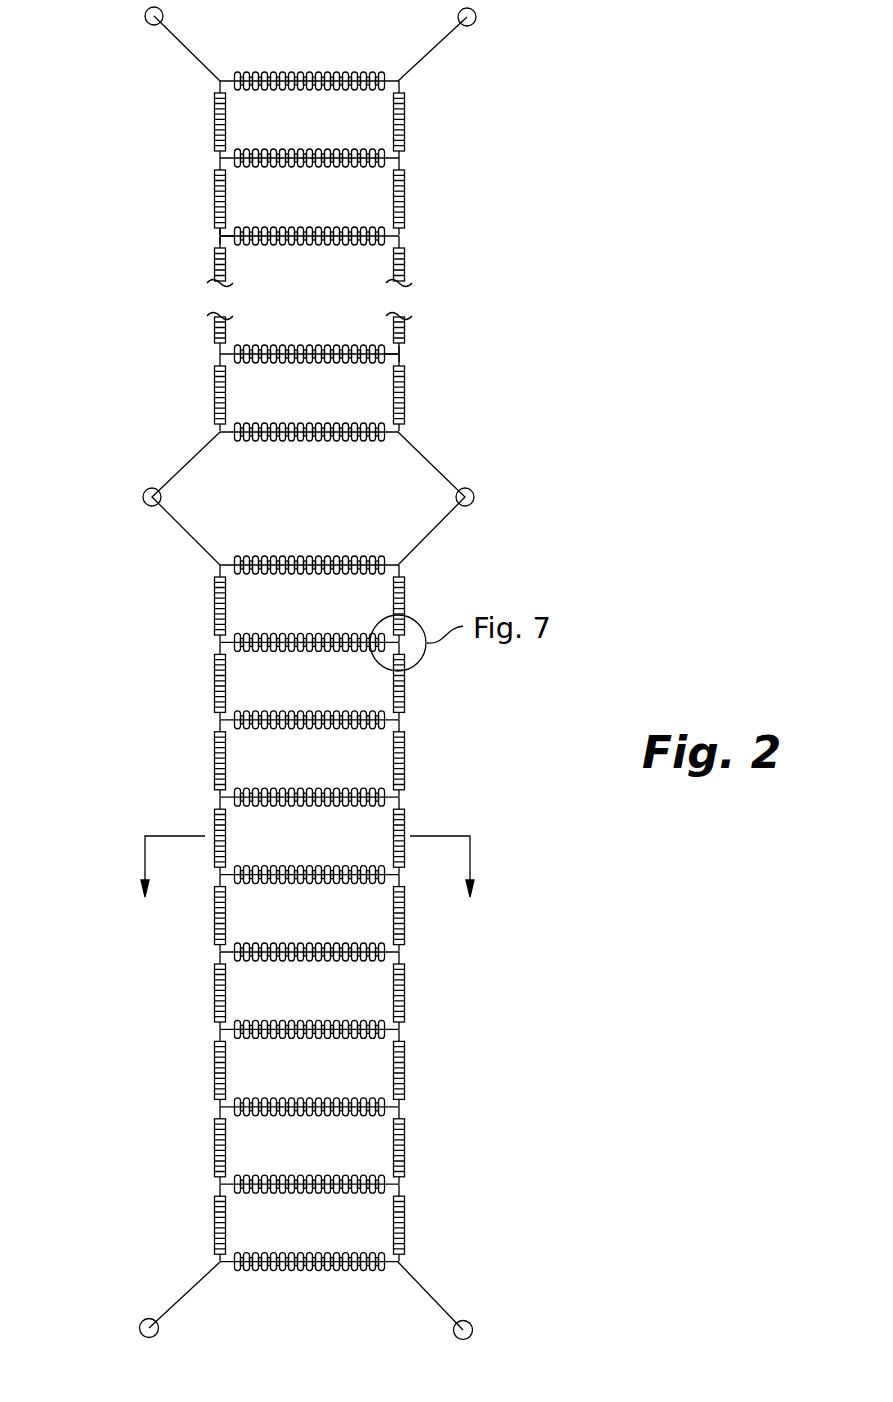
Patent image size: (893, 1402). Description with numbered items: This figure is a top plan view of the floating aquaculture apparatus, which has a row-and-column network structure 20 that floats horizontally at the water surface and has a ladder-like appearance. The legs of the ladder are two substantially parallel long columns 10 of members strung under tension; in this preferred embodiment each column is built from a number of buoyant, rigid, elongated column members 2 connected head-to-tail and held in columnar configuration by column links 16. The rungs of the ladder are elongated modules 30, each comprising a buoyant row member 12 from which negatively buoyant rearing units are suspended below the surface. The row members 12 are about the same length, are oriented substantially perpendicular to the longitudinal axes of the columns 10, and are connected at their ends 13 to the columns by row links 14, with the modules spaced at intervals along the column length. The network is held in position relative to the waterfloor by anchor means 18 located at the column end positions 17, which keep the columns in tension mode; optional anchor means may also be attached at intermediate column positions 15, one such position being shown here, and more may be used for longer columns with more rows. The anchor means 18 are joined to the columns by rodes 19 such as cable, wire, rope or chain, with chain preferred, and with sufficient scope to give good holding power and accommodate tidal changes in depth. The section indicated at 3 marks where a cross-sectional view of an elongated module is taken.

The buoyant elongated column member 2 is at (406, 190).
The section line 3- 3 is at (310, 893).
The column 10 is at (213, 760).
The row member 12 is at (356, 362).
The row member end 13 is at (404, 236).
The row link 14 is at (222, 236).
The intermediate column position 15 is at (404, 432).
The column link 16 is at (404, 157).
The column end position 17 is at (405, 85).
The anchor means 18 is at (142, 22).
The rode 19 is at (435, 43).
The row-and-column network structure 20 is at (416, 1140).
The elongated module 30 is at (328, 347).